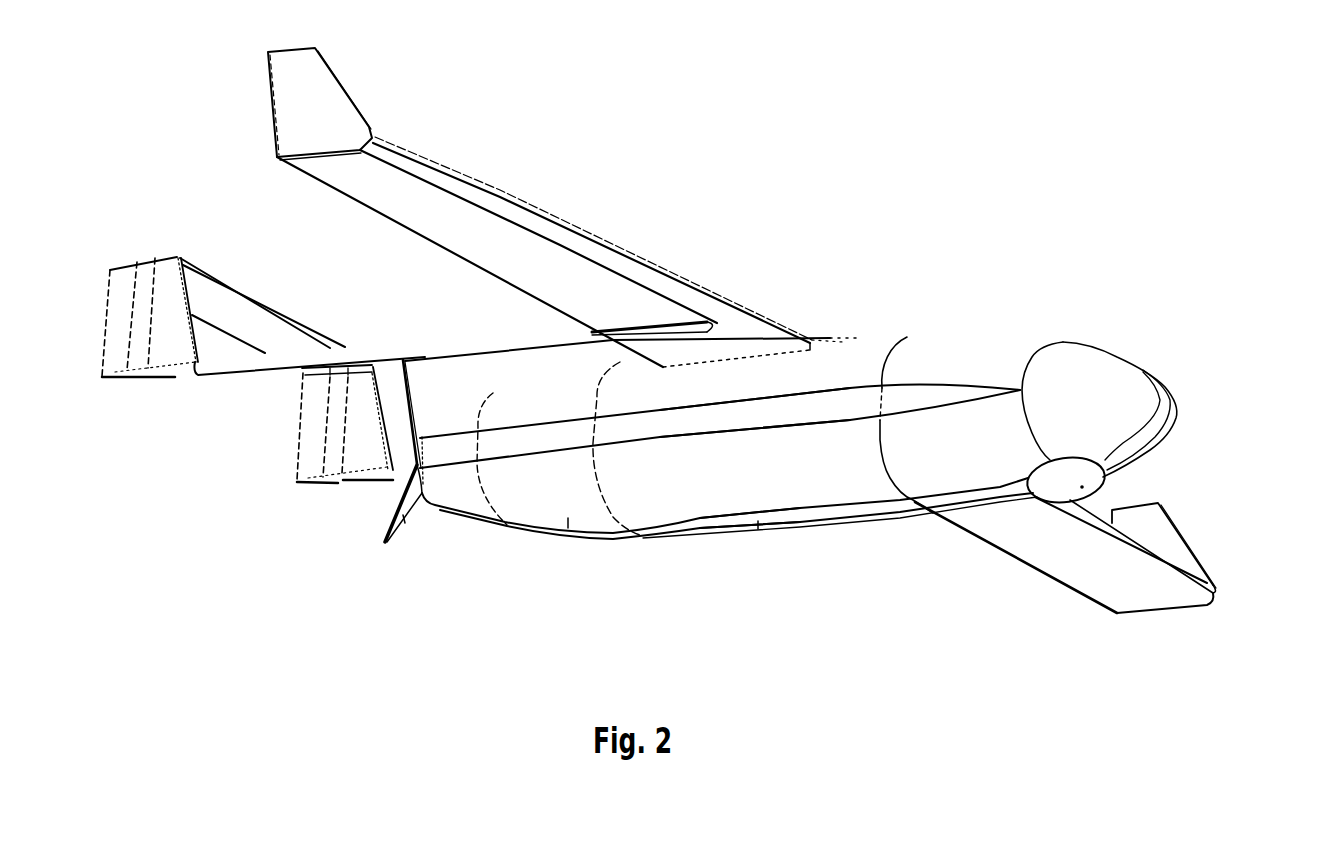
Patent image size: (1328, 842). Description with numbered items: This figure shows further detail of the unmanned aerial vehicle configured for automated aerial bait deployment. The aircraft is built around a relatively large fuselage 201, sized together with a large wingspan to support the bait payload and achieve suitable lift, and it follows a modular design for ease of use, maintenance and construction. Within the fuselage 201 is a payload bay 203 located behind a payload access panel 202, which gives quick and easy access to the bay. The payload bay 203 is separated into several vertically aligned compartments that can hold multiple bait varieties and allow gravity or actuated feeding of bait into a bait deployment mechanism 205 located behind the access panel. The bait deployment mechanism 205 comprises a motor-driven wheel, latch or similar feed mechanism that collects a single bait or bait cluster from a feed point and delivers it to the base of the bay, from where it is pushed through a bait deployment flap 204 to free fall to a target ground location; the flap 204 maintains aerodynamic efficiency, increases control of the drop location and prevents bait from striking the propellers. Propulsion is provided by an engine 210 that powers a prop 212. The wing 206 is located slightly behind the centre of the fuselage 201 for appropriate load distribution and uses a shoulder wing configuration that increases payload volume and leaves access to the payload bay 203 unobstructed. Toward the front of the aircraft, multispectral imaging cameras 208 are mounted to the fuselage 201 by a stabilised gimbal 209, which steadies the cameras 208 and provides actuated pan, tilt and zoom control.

The fuselage 201 is at (947, 328).
The payload access panel 202 is at (1117, 551).
The payload bay 203 is at (780, 554).
The bait deployment mechanism 205 is at (795, 450).
The bait deployment flap 204 is at (750, 574).
The wing 206 is at (555, 207).
The multispectral imaging cameras 208 is at (1216, 527).
The stabilised gimbal 209 is at (1216, 527).
The engine 210 is at (347, 448).
The prop 212 is at (417, 552).